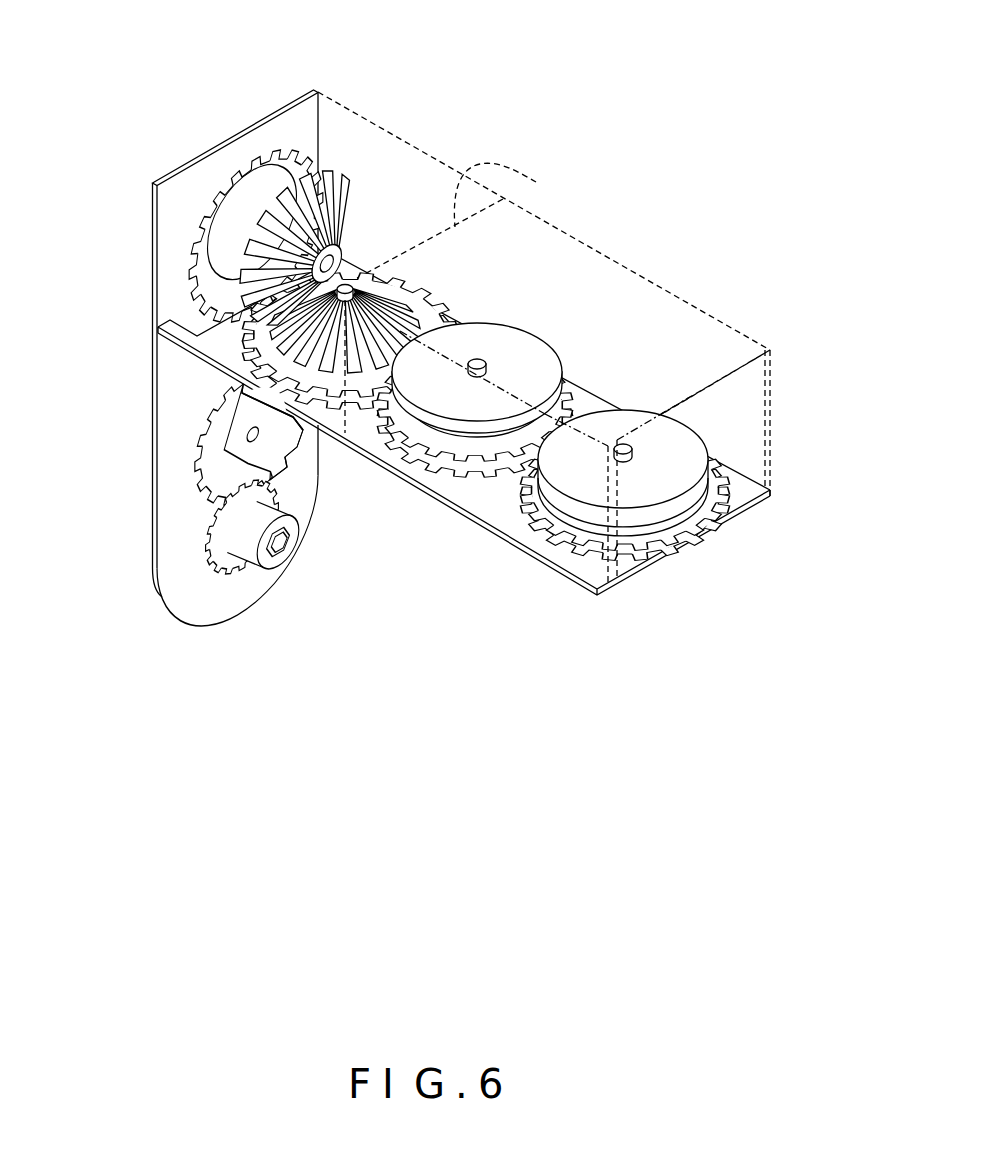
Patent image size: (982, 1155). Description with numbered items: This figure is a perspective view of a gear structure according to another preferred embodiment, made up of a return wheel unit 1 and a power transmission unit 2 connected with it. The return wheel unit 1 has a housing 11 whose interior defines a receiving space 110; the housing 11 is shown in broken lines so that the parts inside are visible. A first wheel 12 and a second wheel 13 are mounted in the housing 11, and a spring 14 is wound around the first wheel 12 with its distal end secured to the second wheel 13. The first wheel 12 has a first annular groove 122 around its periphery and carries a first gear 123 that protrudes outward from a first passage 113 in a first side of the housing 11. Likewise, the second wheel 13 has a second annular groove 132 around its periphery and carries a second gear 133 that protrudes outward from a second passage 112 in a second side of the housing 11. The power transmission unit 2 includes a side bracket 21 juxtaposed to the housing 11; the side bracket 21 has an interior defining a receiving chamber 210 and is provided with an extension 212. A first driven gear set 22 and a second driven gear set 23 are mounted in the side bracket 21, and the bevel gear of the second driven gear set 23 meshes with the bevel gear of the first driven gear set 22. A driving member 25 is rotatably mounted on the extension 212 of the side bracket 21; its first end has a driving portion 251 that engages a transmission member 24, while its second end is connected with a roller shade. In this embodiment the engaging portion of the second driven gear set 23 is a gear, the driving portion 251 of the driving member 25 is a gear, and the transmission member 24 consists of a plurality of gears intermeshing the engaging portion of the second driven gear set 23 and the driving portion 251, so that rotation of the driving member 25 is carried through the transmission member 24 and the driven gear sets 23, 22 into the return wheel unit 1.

The return wheel unit 1 is at (695, 247).
The housing 11 is at (625, 290).
The receiving space 110 is at (737, 447).
The second passage 112 is at (536, 182).
The first passage 113 is at (772, 486).
The first wheel 12 is at (683, 480).
The first annular groove 122 is at (650, 560).
The first gear 123 is at (618, 560).
The second wheel 13 is at (467, 323).
The second annular groove 132 is at (378, 430).
The second gear 133 is at (478, 437).
The spring 14 is at (540, 477).
The power transmission unit 2 is at (441, 124).
The side bracket 21 is at (228, 139).
The receiving chamber 210 is at (337, 140).
The extension 212 is at (152, 583).
The first driven gear set 22 is at (347, 290).
The second driven gear set 23 is at (225, 165).
The transmission member 24 is at (212, 465).
The driving member 25 is at (300, 540).
The driving portion 251 is at (207, 537).